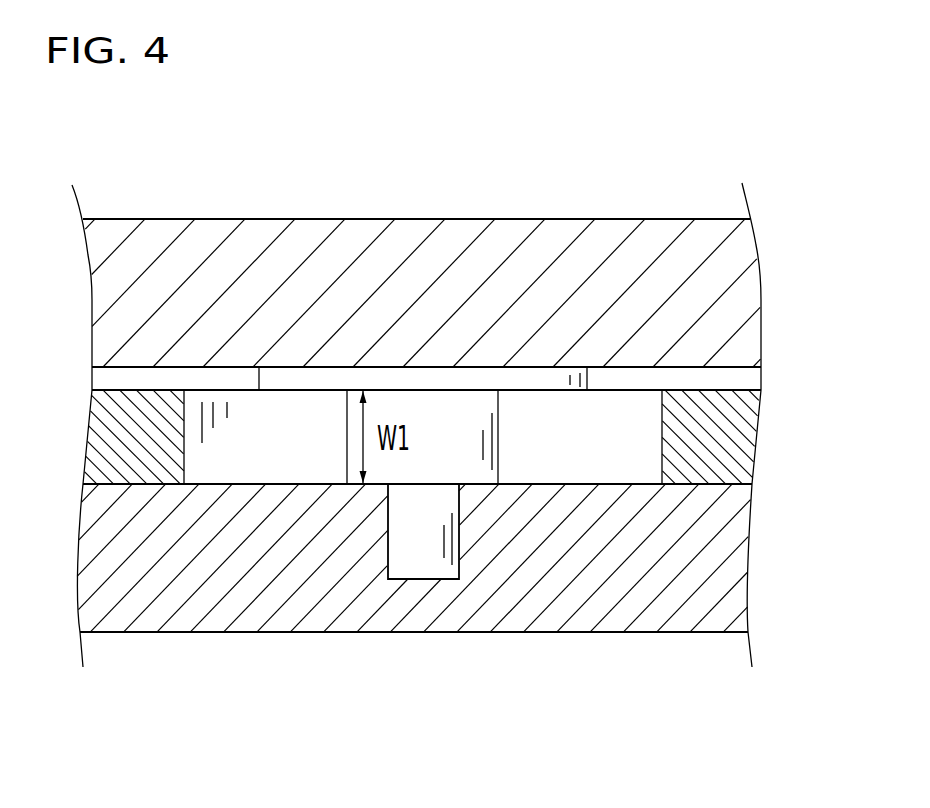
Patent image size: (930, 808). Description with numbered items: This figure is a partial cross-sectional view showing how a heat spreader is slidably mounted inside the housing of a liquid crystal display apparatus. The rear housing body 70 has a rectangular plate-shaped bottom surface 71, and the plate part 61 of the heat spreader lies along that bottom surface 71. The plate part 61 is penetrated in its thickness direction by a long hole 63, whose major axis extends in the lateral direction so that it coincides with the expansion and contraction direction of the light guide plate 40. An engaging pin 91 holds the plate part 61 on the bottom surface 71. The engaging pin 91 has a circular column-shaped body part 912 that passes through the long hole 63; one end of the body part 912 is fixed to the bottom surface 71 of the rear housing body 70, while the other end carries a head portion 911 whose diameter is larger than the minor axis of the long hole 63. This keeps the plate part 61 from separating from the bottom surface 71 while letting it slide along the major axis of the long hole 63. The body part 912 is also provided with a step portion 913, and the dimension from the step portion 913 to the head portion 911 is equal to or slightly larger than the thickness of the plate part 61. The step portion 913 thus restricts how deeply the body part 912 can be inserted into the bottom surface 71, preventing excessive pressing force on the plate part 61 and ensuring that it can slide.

The light guide plate 40 is at (458, 237).
The bottom surface 71 is at (610, 484).
The plate part 61 is at (456, 437).
The long hole 63 is at (663, 441).
The rear housing body 70 is at (673, 625).
The engaging pin 91 is at (332, 581).
The head portion 911 is at (283, 382).
The body part 912 is at (347, 450).
The step portion 913 is at (358, 484).